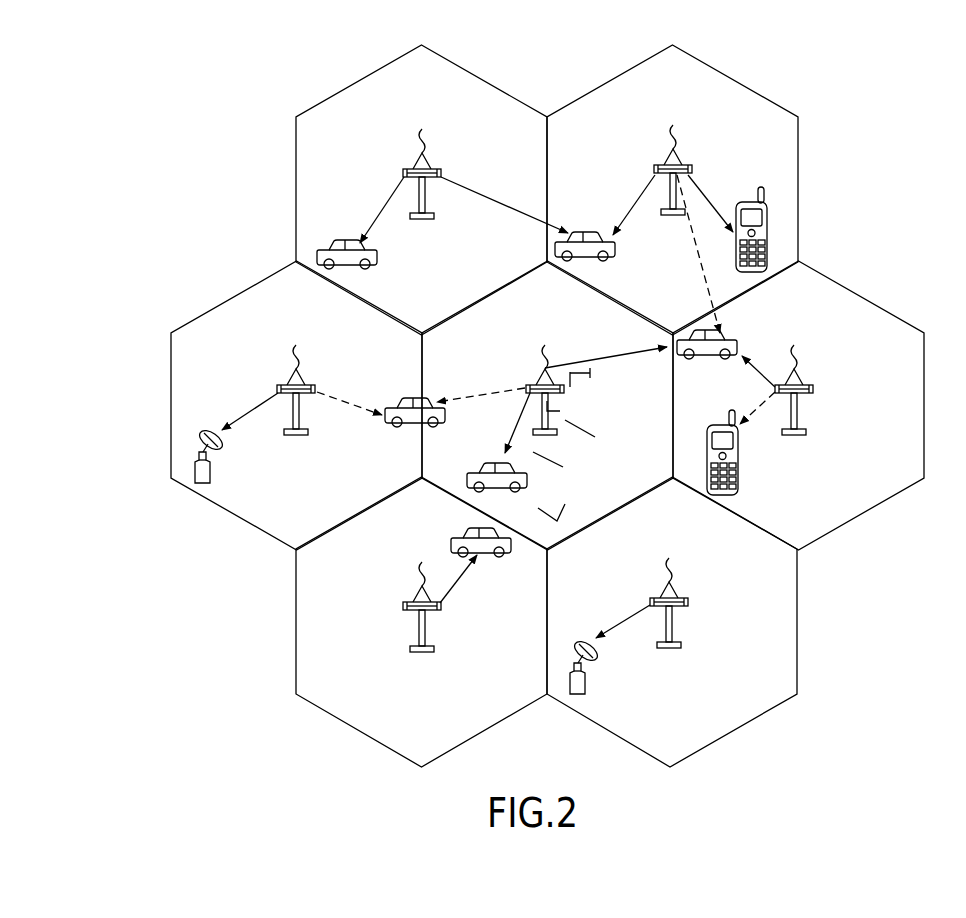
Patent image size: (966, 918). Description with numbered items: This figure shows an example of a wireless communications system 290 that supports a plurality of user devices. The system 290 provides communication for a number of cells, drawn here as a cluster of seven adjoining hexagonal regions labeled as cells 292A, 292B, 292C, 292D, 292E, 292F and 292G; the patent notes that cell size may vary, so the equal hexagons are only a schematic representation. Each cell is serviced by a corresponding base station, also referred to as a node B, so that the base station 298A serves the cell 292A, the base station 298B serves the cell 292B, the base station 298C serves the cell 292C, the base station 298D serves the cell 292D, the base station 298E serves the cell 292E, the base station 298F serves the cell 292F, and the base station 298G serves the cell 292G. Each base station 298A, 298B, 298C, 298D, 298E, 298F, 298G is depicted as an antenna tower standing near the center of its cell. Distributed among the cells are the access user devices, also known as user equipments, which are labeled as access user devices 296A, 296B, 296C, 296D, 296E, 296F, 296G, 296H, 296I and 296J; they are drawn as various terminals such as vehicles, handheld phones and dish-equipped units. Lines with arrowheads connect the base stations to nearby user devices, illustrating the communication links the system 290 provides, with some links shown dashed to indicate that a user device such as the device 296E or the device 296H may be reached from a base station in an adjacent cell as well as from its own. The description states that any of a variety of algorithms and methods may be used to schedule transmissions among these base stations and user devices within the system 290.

The wireless communications system 290 is at (110, 118).
The cell 292A is at (442, 86).
The cell 292B is at (690, 86).
The cell 292C is at (315, 314).
The cell 292D is at (562, 312).
The cell 292E is at (815, 314).
The cell 292F is at (440, 524).
The cell 292G is at (689, 524).
The base station 298A is at (422, 161).
The base station 298B is at (672, 158).
The base station 298C is at (296, 378).
The base station 298D is at (545, 378).
The base station 298E is at (794, 378).
The base station 298F is at (422, 595).
The base station 298G is at (669, 591).
The access user device 296A is at (377, 263).
The access user device 296B is at (748, 200).
The access user device 296C is at (211, 470).
The access user device 296D is at (528, 482).
The access user device 296E is at (707, 357).
The access user device 296F is at (508, 555).
The access user device 296G is at (587, 683).
The access user device 296H is at (393, 425).
The access user device 296I is at (738, 481).
The access user device 296J is at (587, 232).